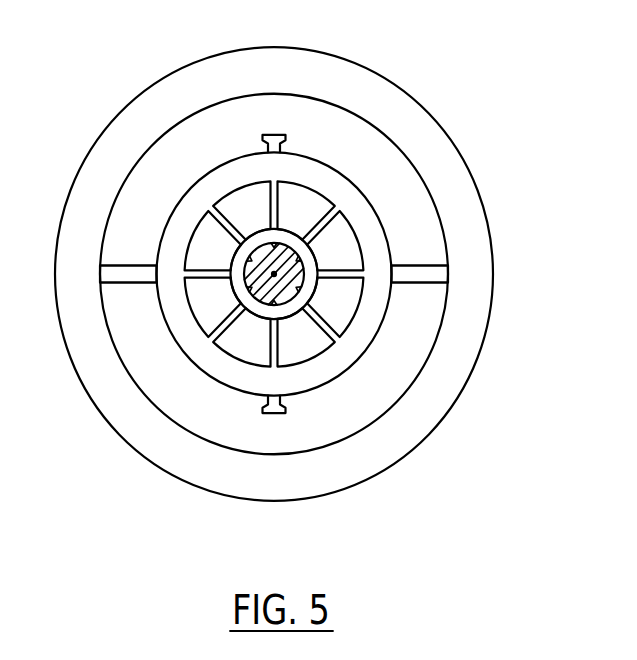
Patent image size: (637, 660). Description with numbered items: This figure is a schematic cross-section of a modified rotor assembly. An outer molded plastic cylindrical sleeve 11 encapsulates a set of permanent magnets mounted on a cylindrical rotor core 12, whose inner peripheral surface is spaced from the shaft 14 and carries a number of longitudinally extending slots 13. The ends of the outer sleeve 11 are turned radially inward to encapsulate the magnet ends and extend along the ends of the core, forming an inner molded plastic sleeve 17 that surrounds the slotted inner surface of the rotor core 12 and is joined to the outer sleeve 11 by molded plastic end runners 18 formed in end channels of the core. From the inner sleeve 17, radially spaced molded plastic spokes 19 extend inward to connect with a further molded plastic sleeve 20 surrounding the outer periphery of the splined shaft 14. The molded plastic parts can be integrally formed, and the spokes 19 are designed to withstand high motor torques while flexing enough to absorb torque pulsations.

The outer molded plastic cylindrical sleeve 11 is at (403, 448).
The cylindrical rotor core 12 is at (179, 178).
The longitudinally extending slots 13 is at (273, 136).
The shaft 14 is at (388, 242).
The inner molded plastic sleeve 17 is at (310, 380).
The molded plastic end runners 18 is at (432, 266).
The molded plastic spokes 19 is at (281, 203).
The molded plastic sleeve 20 is at (252, 237).